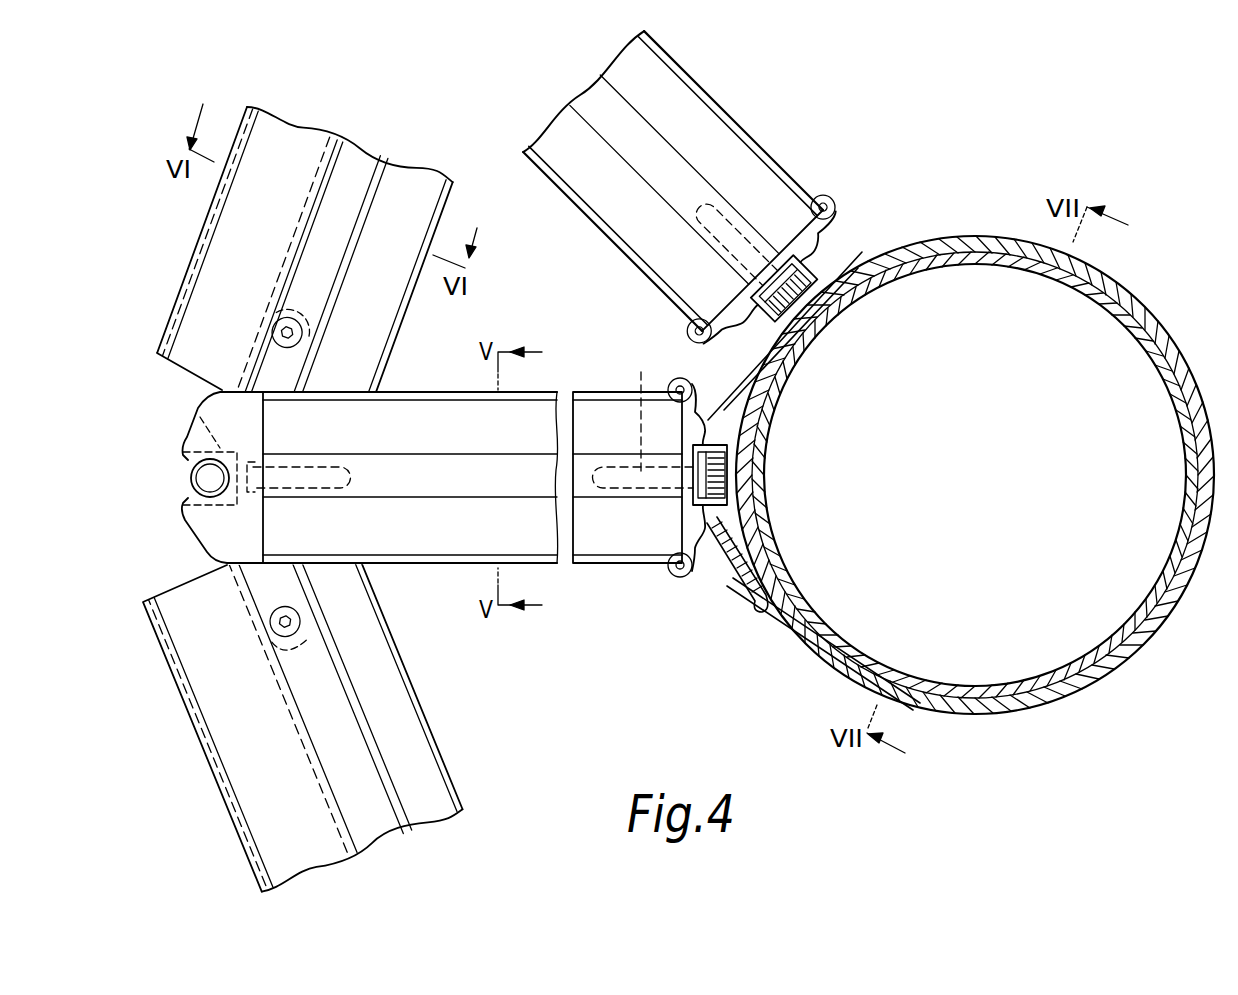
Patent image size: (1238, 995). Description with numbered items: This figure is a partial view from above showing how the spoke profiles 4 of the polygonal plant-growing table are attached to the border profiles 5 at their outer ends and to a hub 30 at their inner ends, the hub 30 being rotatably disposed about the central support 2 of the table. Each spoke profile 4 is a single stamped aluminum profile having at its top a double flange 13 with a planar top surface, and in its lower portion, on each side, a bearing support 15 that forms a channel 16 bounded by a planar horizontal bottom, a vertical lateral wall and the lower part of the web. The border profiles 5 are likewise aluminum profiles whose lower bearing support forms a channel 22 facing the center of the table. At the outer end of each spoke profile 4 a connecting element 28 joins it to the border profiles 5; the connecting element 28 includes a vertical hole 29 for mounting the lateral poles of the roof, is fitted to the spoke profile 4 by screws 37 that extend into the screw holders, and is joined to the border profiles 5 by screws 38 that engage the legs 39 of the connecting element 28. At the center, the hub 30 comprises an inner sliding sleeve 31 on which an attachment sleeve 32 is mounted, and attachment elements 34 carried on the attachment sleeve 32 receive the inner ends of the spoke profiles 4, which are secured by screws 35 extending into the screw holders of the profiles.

The central support 2 is at (1184, 447).
The spoke profile 4 is at (542, 332).
The border profile 5 is at (289, 297).
The double flange 13 is at (400, 467).
The bearing support 15 is at (528, 394).
The channel 16 is at (663, 260).
The channel 22 is at (403, 725).
The connecting element 28 is at (202, 530).
The vertical hole 29 is at (187, 478).
The hub 30 is at (1150, 306).
The inner sliding sleeve 31 is at (1170, 343).
The attachment sleeve 32 is at (868, 248).
The attachment element 34 is at (722, 517).
The screw 35 is at (646, 407).
The screw 37 is at (198, 416).
The screw 38 is at (291, 329).
The leg 39 is at (272, 292).